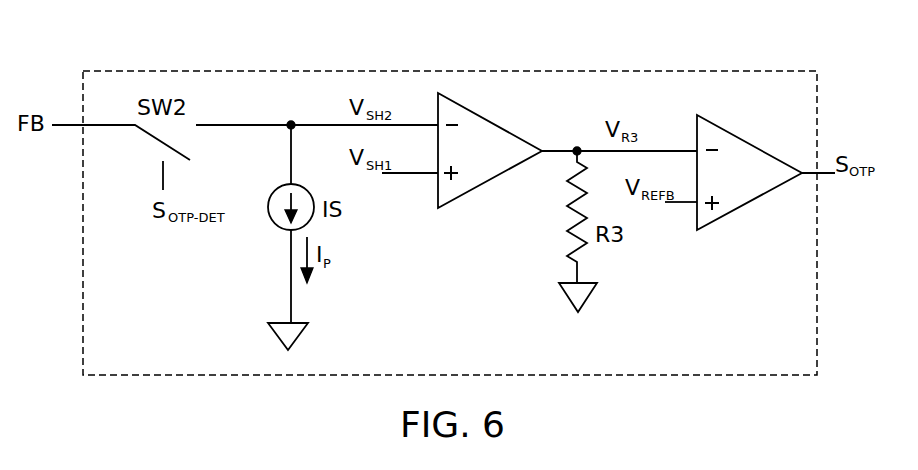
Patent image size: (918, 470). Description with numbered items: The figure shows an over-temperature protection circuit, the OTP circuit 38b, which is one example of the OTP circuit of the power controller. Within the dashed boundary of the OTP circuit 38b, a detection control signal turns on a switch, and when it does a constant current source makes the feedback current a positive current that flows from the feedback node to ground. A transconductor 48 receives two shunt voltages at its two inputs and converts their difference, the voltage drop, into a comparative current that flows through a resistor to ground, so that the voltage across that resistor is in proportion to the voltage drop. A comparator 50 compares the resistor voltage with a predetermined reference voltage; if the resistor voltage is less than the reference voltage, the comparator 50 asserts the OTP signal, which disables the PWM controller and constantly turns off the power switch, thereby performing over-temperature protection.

The OTP circuit 38b is at (173, 71).
The transconductor 48 is at (482, 183).
The comparator 50 is at (743, 207).